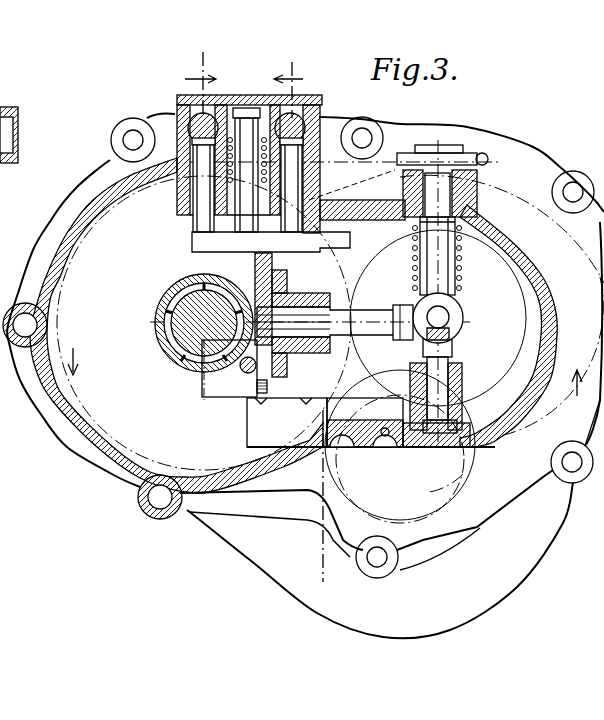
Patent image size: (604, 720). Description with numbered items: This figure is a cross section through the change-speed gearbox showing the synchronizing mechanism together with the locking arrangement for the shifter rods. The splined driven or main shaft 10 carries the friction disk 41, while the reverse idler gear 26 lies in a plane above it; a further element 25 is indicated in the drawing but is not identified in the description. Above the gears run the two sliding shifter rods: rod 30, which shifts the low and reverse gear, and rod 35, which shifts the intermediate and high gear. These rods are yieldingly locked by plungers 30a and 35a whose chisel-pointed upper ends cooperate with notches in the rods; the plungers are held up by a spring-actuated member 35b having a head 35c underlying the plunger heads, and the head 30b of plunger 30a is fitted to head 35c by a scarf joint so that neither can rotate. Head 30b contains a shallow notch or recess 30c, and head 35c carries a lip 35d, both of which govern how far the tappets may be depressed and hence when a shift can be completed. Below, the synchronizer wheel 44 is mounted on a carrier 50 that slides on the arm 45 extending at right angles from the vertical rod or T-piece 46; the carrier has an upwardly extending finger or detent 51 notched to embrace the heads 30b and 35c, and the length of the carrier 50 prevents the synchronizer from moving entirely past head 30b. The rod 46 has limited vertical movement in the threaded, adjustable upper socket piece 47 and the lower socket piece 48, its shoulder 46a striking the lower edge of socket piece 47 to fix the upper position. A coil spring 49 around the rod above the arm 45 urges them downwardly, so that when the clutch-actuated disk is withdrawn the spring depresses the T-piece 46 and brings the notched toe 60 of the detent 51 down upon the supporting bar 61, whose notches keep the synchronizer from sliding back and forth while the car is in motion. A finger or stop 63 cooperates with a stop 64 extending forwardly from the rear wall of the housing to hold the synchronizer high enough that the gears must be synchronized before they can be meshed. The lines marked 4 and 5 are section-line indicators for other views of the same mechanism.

The section line 5- 5 is at (257, 318).
The section line 4- 4 is at (288, 217).
The sliding shifter rod 35 is at (177, 110).
The sliding shifter rod 30 is at (322, 108).
The plunger 35a is at (200, 196).
The spring-actuated member 35b is at (247, 220).
The head 35c is at (235, 244).
The lip 35d is at (248, 255).
The plunger 30a is at (315, 176).
The head 30b is at (310, 238).
The notch or recess 30c is at (325, 255).
The finger or detent 51 is at (278, 262).
The carrier 50 is at (330, 300).
The arm or shaft 45 is at (343, 340).
The synchronizing wheel 44 is at (288, 368).
The main shaft 10 is at (175, 348).
The notched toe 60 is at (257, 393).
The supporting bar 61 is at (361, 446).
The upper socket piece 47 is at (455, 190).
The shoulder 46a is at (453, 224).
The coil spring 49 is at (457, 247).
The vertical rod 46 is at (447, 265).
The finger or stop 63 is at (443, 313).
The stop 64 is at (449, 331).
The reverse idler gear 26 is at (520, 337).
The lower socket piece 48 is at (462, 388).
The ring gear 25 is at (472, 455).
The friction disk 41 is at (105, 432).